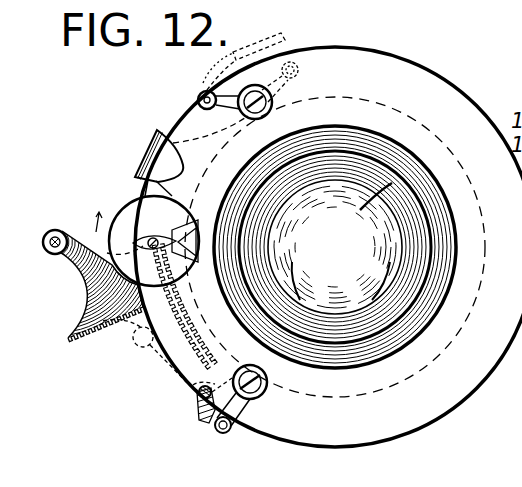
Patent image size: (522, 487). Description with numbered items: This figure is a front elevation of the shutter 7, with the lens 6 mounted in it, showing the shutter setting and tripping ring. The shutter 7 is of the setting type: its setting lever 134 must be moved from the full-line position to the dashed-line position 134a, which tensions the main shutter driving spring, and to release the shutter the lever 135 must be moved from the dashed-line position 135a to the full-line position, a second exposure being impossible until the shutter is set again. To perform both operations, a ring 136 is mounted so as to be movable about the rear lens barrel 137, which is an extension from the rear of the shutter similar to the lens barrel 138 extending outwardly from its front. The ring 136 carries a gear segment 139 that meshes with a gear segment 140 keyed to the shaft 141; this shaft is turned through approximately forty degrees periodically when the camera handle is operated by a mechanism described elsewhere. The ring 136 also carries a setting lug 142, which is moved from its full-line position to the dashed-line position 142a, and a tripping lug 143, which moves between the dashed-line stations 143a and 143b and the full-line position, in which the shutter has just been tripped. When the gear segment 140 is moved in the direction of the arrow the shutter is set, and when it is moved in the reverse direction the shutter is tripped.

The lens 6 is at (351, 226).
The shutter 7 is at (429, 101).
The setting lever 134 is at (199, 96).
The dashed-line position of setting lever 134a is at (300, 63).
The lever 135 is at (237, 424).
The dashed-line position of release lever 135a is at (188, 410).
The ring 136 is at (470, 280).
The rear lens barrel 137 is at (330, 367).
The lens barrel 138 is at (395, 355).
The gear segment 139 is at (150, 353).
The gear segment 140 is at (90, 289).
The shaft 141 is at (64, 232).
The setting lug 142 is at (162, 160).
The dashed-line position of setting lug 142a is at (277, 40).
The tripping lug 143 is at (209, 424).
The dashed-line station of tripping lug 143a is at (146, 353).
The latch pin 143b is at (193, 393).